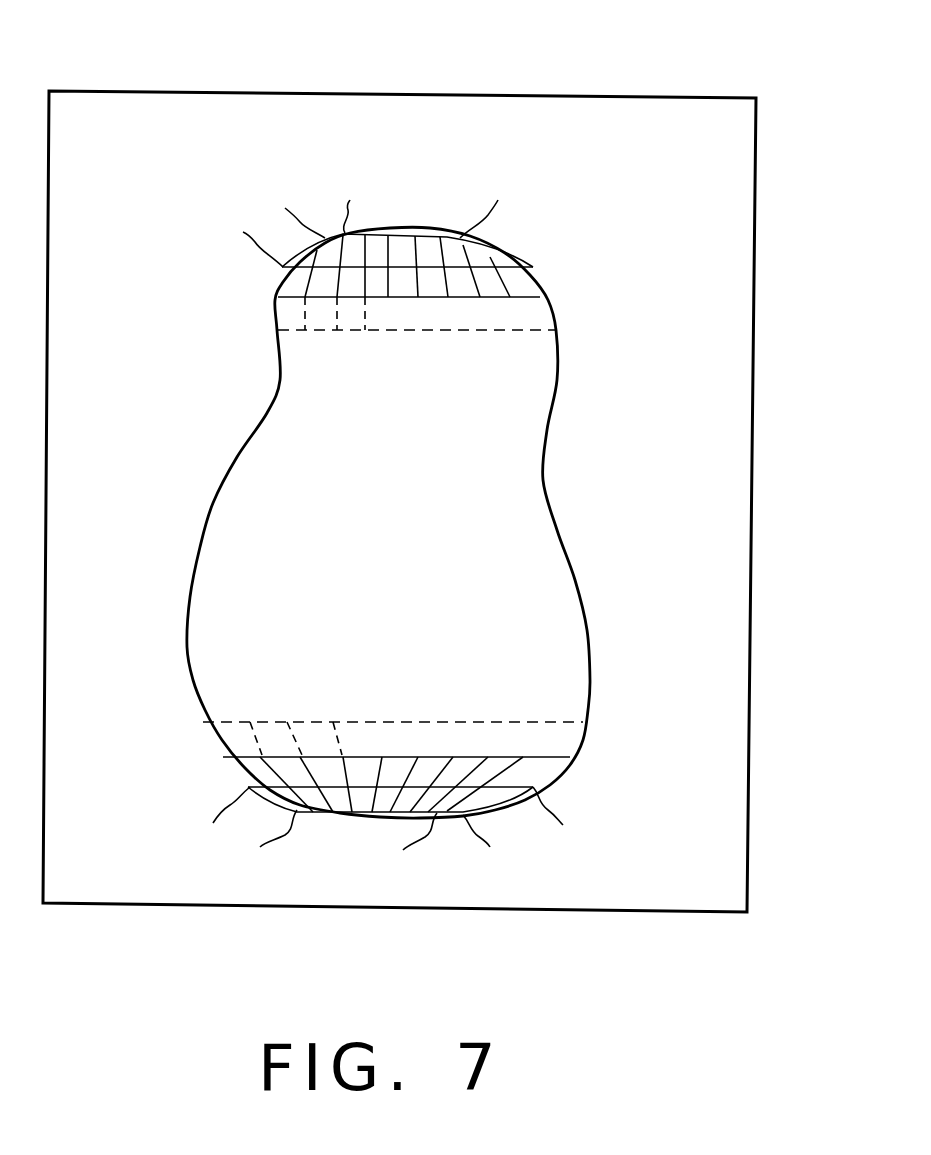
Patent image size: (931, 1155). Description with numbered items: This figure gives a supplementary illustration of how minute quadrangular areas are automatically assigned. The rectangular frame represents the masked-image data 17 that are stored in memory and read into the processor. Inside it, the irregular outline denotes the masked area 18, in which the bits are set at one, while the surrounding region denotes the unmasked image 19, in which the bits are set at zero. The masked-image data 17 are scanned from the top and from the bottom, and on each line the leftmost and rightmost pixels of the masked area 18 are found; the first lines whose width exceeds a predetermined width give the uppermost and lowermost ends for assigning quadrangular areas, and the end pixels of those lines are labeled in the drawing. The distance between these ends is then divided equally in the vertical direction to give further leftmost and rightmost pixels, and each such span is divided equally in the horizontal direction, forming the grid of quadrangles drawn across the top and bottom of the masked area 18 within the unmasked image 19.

The masked-image data 17 is at (563, 97).
The masked area 18 is at (243, 537).
The unmasked image 19 is at (717, 543).